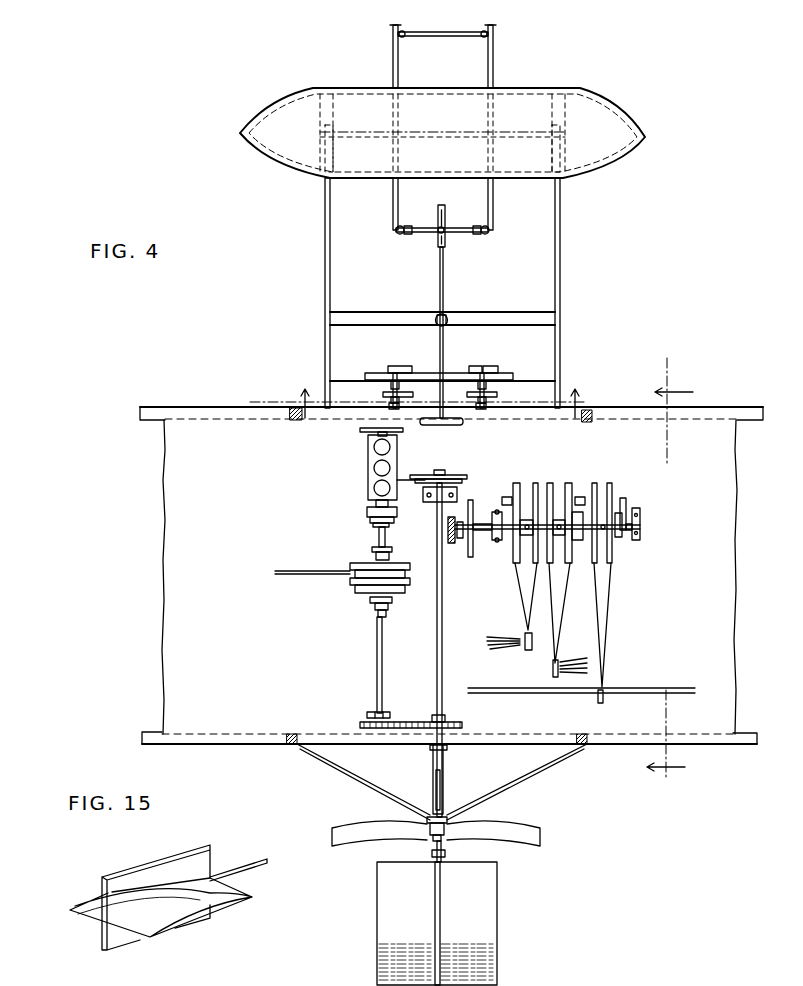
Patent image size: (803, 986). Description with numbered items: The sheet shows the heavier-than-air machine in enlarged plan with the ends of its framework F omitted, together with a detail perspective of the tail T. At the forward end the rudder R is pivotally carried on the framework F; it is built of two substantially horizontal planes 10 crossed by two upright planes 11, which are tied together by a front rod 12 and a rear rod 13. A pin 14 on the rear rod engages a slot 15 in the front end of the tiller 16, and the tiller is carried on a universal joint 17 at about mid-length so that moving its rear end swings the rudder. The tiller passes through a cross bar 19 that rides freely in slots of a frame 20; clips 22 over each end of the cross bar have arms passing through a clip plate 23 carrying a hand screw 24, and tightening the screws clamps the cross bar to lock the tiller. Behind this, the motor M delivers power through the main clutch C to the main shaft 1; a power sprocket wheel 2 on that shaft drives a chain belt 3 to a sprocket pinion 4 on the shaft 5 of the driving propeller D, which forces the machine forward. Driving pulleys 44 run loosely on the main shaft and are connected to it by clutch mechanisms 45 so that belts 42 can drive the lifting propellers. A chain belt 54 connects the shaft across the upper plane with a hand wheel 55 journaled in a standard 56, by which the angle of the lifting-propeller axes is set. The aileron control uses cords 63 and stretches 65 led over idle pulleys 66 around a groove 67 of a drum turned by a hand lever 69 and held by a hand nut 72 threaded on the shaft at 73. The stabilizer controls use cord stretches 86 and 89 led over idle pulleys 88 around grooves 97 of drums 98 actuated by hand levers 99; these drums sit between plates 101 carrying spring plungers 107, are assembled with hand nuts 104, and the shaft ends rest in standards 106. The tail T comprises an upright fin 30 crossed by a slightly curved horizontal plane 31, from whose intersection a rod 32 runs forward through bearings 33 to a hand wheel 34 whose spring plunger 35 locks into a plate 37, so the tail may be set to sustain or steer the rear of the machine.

In FIG. 4, the horizontal planes of rudder 10 is at (620, 116).
In FIG. 4, the upright planes of rudder 11 is at (393, 60).
In FIG. 4, the front rod 12 is at (443, 23).
In FIG. 4, the rudder R is at (296, 88).
In FIG. 4, the framework F is at (560, 262).
In FIG. 4, the rear rod 13 is at (458, 240).
In FIG. 4, the pin 14 is at (432, 240).
In FIG. 4, the slot 15 is at (446, 212).
In FIG. 4, the tiller 16 is at (438, 280).
In FIG. 4, the universal joint 17 is at (450, 317).
In FIG. 4, the cross bar 19 is at (514, 375).
In FIG. 4, the frame 20 is at (476, 366).
In FIG. 4, the clip 22 is at (394, 366).
In FIG. 4, the clip plate 23 is at (380, 394).
In FIG. 4, the hand screw 24 is at (385, 406).
In FIG. 4, the spring-actuated plunger 35 is at (428, 474).
In FIG. 4, the motor M is at (368, 462).
In FIG. 4, the hand wheel 34 is at (368, 480).
In FIG. 4, the plate 37 is at (372, 490).
In FIG. 4, the main clutch C is at (366, 512).
In FIG. 4, the clutch mechanism 45 is at (372, 552).
In FIG. 4, the driving pulley 44 is at (350, 566).
In FIG. 4, the belt 42 is at (290, 578).
In FIG. 4, the main shaft 1 is at (376, 665).
In FIG. 4, the power sprocket wheel 2 is at (366, 715).
In FIG. 4, the chain belt 3 is at (405, 730).
In FIG. 4, the sprocket pinion 4 is at (450, 722).
In FIG. 4, the propeller shaft 5 is at (444, 760).
In FIG. 4, the bearings 33 is at (437, 500).
In FIG. 4, the driving propeller D is at (542, 835).
In FIG. 4, the rod 32 is at (446, 853).
In FIG. 15, the rod 32 is at (262, 866).
In FIG. 4, the upright plane or fin 30 is at (440, 906).
In FIG. 15, the upright plane or fin 30 is at (98, 918).
In FIG. 4, the horizontal plane 31 is at (377, 915).
In FIG. 15, the horizontal plane 31 is at (96, 898).
In FIG. 4, the chain belt 54 is at (448, 538).
In FIG. 4, the hand wheel 55 is at (493, 545).
In FIG. 4, the standard 56 is at (466, 548).
In FIG. 4, the hand nuts 104 is at (498, 512).
In FIG. 4, the spring-actuated plungers 107 is at (504, 480).
In FIG. 4, the groove 97 is at (516, 483).
In FIG. 4, the drum 98 is at (535, 483).
In FIG. 4, the hand lever 99 is at (524, 530).
In FIG. 4, the groove 67 is at (594, 483).
In FIG. 4, the hand lever 69 is at (620, 513).
In FIG. 4, the hand nut 72 is at (626, 510).
In FIG. 4, the standards 106 is at (641, 525).
In FIG. 4, the threaded portion 73 is at (634, 538).
In FIG. 4, the cord 63 is at (650, 706).
In FIG. 4, the cord stretch 86 is at (514, 572).
In FIG. 4, the cord stretch 89 is at (527, 625).
In FIG. 4, the plates 101 is at (584, 573).
In FIG. 4, the idle pulleys 88 is at (551, 670).
In FIG. 4, the idle pulleys 66 is at (600, 703).
In FIG. 4, the cord stretch 65 is at (636, 686).
In FIG. 15, the tail T is at (198, 936).